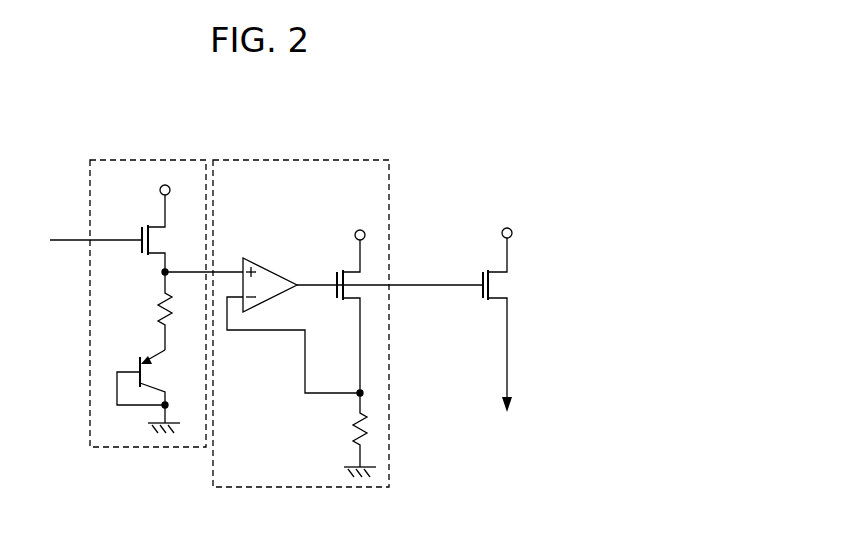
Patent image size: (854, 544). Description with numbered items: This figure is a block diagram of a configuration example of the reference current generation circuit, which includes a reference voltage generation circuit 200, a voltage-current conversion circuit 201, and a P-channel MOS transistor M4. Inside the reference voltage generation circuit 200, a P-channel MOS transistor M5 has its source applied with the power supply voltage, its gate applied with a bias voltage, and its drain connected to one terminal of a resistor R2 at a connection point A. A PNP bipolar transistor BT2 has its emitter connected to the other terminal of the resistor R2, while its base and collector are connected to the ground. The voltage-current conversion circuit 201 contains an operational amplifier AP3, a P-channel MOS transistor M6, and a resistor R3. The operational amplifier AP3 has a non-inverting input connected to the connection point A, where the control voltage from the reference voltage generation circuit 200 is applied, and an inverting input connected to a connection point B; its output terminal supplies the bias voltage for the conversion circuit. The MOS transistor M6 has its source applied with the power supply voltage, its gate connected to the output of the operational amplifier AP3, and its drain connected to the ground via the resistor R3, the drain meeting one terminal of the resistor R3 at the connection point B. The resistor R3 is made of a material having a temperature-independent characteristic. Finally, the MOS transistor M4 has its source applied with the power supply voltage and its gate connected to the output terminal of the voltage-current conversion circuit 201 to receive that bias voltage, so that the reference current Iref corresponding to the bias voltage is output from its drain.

The reference voltage generation circuit 200 is at (161, 160).
The voltage-current conversion circuit 201 is at (390, 464).
The P-channel MOS transistor M5 is at (146, 227).
The connection point A is at (163, 274).
The resistor R2 is at (180, 311).
The PNP bipolar transistor BT2 is at (150, 370).
The operational amplifier AP3 is at (268, 264).
The P-channel MOS transistor M6 is at (341, 270).
The connection point B is at (358, 393).
The resistor R3 is at (350, 435).
The P-channel MOS transistor M4 is at (486, 270).
The reference current Iref is at (514, 343).